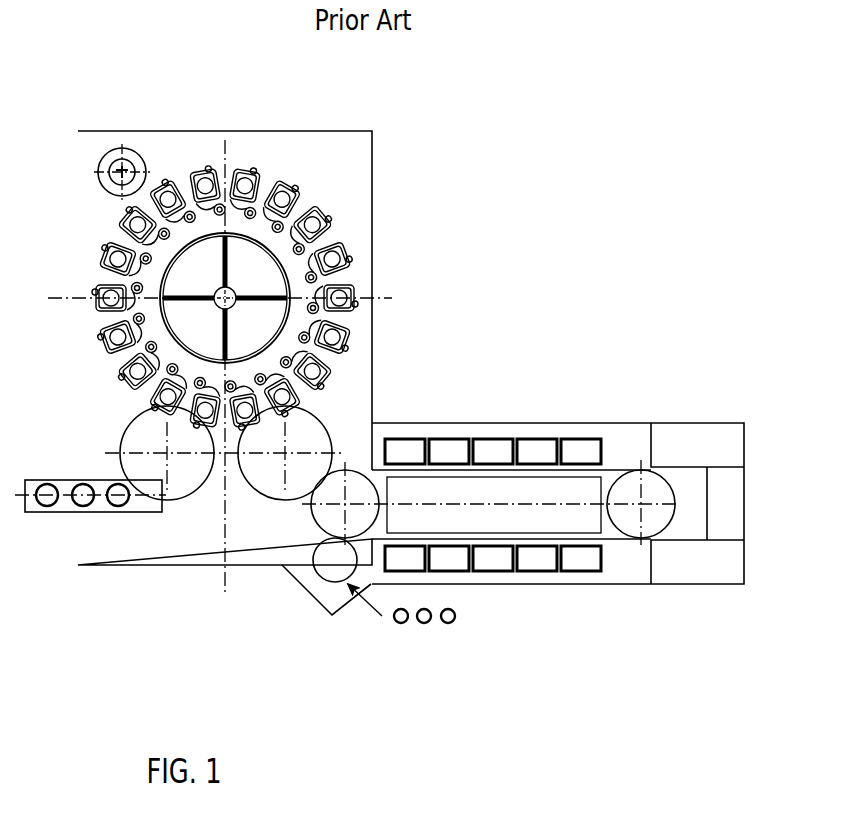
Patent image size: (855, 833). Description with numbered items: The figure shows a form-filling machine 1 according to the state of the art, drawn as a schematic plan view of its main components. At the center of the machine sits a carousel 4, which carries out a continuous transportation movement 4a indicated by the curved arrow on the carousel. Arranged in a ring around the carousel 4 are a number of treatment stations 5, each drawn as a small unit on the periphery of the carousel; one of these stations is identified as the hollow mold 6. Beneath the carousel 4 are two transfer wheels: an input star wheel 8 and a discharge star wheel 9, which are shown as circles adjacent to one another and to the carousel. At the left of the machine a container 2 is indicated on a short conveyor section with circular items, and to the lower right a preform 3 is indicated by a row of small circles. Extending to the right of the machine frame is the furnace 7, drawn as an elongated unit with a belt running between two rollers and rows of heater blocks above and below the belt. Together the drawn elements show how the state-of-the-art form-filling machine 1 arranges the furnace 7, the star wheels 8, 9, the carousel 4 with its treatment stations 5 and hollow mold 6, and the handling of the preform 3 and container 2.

The form-filling machine 1 is at (540, 281).
The container 2 is at (43, 478).
The preform 3 is at (464, 617).
The carousel 4 is at (275, 270).
The continuous transportation movement 4a is at (273, 314).
The treatment station 5 is at (316, 184).
The hollow mold 6 is at (352, 263).
The furnace 7 is at (613, 420).
The input star wheel 8 is at (296, 485).
The discharge star wheel 9 is at (176, 483).